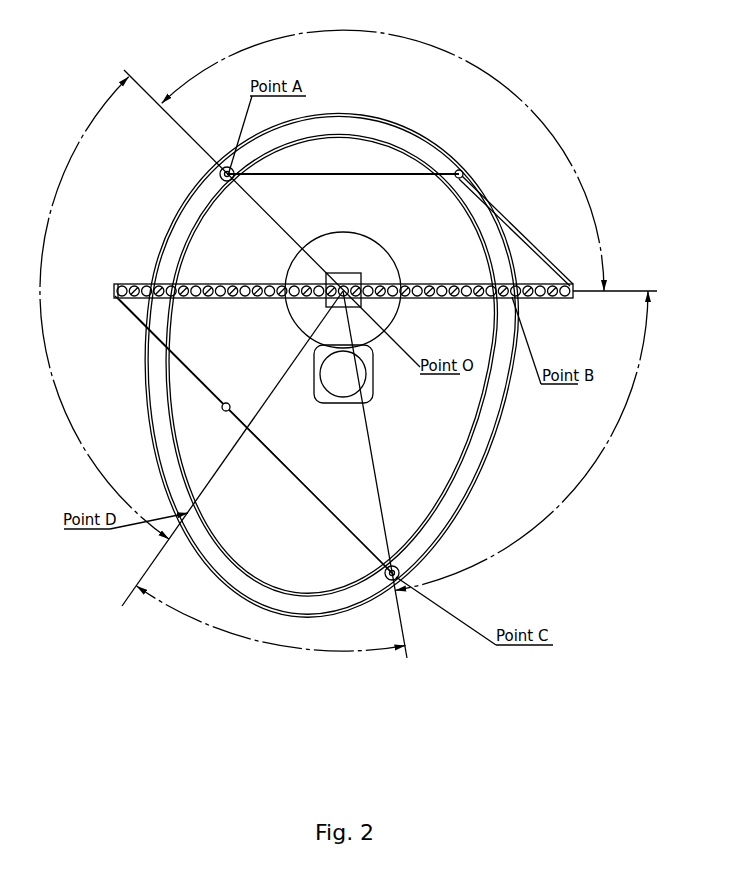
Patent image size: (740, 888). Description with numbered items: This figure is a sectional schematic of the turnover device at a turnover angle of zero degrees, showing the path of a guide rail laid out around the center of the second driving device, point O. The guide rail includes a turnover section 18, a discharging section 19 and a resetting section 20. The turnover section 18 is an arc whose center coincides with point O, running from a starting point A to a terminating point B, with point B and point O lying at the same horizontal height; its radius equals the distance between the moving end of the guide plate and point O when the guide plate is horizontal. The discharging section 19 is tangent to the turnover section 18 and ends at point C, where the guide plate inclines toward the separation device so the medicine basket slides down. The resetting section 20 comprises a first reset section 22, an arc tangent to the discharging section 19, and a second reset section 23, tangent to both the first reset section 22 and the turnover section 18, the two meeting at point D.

The turnover section 18 is at (383, 156).
The discharging section 19 is at (521, 440).
The resetting section 20 is at (165, 529).
The first reset section 22 is at (271, 618).
The second reset section 23 is at (103, 308).